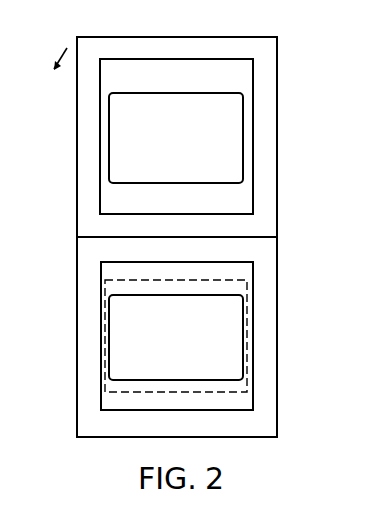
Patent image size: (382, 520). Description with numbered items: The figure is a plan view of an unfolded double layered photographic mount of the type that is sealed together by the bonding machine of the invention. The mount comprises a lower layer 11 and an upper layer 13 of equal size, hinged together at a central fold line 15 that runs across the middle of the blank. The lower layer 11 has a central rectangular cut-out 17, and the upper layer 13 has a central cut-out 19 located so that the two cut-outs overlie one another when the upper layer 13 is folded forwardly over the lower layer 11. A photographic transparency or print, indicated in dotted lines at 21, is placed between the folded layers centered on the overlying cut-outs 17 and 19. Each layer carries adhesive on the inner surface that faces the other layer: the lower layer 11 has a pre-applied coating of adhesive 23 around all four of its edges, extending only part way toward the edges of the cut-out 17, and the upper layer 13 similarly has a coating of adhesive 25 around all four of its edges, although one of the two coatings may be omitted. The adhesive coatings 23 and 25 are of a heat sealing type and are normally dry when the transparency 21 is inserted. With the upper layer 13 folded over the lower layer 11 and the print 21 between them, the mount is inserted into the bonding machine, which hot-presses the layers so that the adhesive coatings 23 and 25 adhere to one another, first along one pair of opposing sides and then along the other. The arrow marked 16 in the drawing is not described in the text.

The lower layer 11 is at (271, 324).
The upper layer 13 is at (271, 131).
The central fold line 15 is at (262, 238).
The frame blank 16 is at (278, 216).
The central rectangular cut-out 17 is at (163, 295).
The central cut-out 19 is at (150, 94).
The photographic transparency 21 is at (245, 383).
The coating of adhesive 23 is at (82, 313).
The coating of adhesive 25 is at (78, 162).